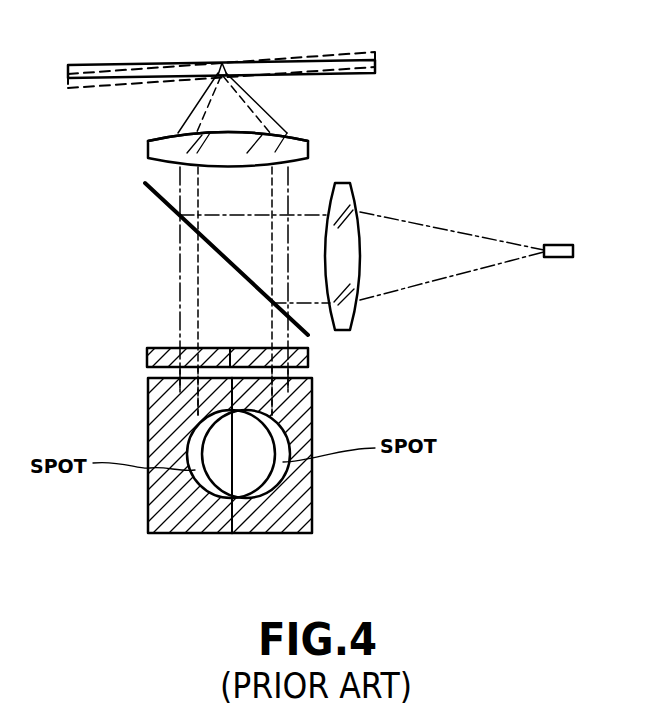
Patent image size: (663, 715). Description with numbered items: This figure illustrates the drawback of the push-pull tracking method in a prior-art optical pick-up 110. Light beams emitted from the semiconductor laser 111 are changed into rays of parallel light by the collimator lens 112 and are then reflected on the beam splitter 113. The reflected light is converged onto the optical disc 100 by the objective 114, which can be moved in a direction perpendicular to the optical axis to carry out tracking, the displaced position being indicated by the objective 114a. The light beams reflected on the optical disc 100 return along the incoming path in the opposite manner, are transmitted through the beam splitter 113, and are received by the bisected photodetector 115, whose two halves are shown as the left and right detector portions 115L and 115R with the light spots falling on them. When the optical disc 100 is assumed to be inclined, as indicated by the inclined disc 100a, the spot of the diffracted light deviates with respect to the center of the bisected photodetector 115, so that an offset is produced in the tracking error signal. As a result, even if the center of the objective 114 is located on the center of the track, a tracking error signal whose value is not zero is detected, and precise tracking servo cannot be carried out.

The optical disc 100 is at (355, 75).
The inclined optical disc 100a is at (330, 52).
The optical pick-up 110 is at (521, 228).
The semiconductor laser 111 is at (556, 247).
The collimator lens 112 is at (343, 310).
The beam splitter 113 is at (146, 188).
The objective 114 is at (306, 152).
The moved objective position 114a is at (303, 140).
The bisected photodetector 115 is at (141, 367).
The left photodetector 115L is at (173, 517).
The right photodetector 115R is at (287, 510).